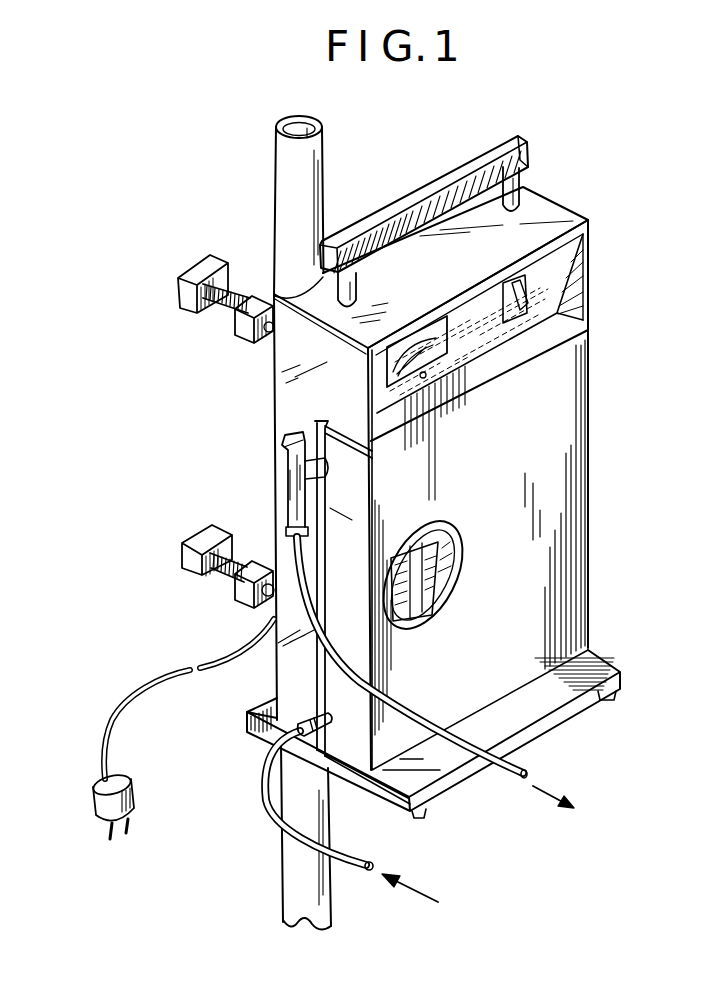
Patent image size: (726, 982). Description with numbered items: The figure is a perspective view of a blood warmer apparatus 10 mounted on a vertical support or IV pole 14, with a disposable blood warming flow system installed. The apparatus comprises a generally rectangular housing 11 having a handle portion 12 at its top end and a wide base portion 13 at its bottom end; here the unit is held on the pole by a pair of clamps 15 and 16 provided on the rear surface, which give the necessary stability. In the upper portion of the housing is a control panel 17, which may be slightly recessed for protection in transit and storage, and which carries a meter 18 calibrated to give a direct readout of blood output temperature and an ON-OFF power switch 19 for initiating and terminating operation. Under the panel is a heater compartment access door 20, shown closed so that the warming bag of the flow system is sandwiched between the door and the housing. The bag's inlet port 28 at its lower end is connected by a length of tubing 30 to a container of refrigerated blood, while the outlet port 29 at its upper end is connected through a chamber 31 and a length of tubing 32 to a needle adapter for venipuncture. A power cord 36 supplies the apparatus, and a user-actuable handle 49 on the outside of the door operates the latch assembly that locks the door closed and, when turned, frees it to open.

The blood warmer apparatus 10 is at (578, 214).
The housing 11 is at (543, 203).
The handle portion 12 is at (432, 178).
The base portion 13 is at (606, 664).
The IV pole 14 is at (287, 157).
The clamp 15 is at (237, 338).
The clamp 16 is at (205, 542).
The control panel 17 is at (557, 272).
The meter 18 is at (420, 353).
The ON-OFF power switch 19 is at (527, 308).
The heater compartment access door 20 is at (583, 548).
The inlet port 28 is at (300, 733).
The outlet port 29 is at (328, 470).
The tubing 30 is at (358, 850).
The chamber 31 is at (290, 496).
The tubing 32 is at (530, 762).
The power cord 36 is at (153, 682).
The handle 49 is at (422, 578).